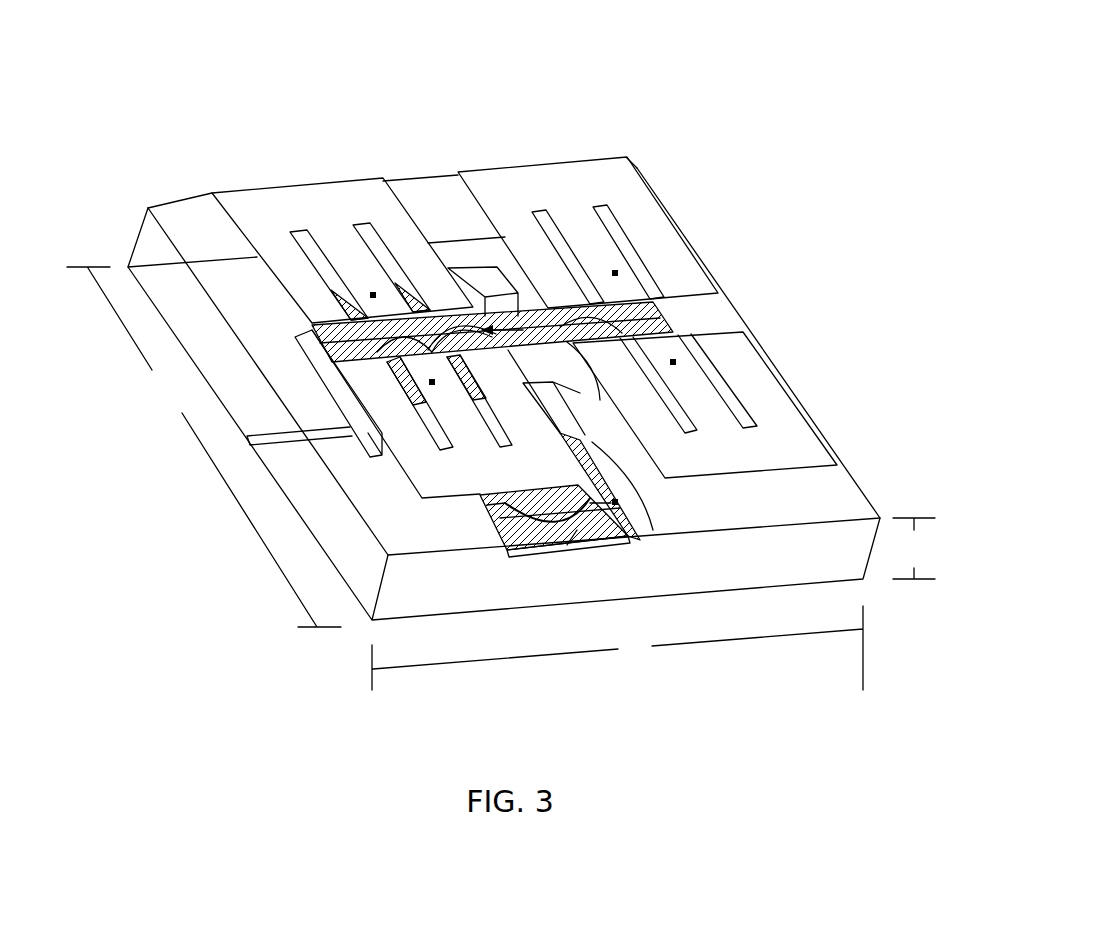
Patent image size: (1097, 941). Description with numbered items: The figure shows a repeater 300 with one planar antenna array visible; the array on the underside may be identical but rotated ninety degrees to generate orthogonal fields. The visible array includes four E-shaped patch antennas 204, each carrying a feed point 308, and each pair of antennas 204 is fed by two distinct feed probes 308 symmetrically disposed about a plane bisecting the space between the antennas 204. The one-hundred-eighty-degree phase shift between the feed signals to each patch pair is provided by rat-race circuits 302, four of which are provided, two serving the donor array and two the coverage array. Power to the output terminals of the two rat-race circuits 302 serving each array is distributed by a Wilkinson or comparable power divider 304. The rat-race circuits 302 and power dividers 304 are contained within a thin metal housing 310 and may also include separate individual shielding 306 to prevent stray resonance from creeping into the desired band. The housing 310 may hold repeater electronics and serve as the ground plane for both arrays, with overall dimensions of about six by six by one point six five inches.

The repeater 300 is at (692, 98).
The rat-race circuit 302 is at (402, 336).
The power divider 304 is at (648, 522).
The shielding 306 is at (300, 376).
The feed point 308 is at (630, 273).
The housing 310 is at (118, 220).
The E-shaped patch antenna 204 is at (343, 196).